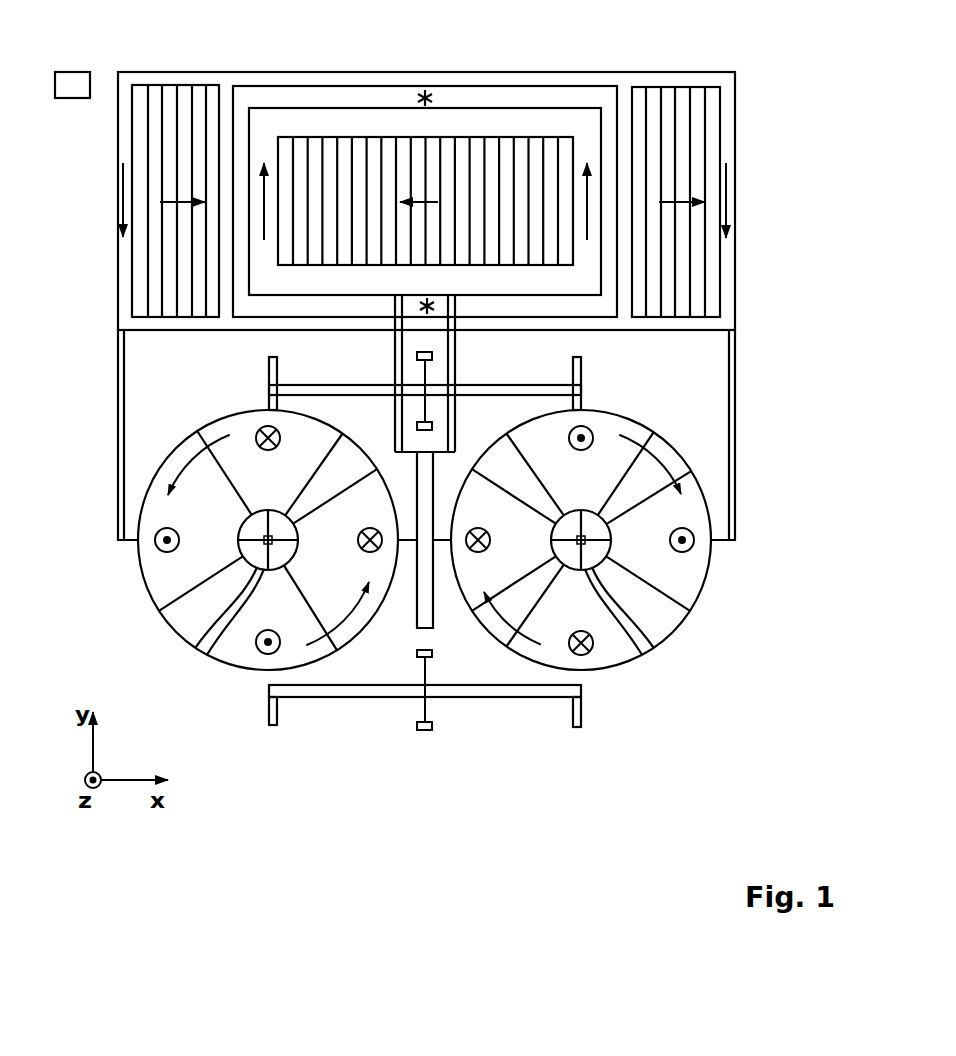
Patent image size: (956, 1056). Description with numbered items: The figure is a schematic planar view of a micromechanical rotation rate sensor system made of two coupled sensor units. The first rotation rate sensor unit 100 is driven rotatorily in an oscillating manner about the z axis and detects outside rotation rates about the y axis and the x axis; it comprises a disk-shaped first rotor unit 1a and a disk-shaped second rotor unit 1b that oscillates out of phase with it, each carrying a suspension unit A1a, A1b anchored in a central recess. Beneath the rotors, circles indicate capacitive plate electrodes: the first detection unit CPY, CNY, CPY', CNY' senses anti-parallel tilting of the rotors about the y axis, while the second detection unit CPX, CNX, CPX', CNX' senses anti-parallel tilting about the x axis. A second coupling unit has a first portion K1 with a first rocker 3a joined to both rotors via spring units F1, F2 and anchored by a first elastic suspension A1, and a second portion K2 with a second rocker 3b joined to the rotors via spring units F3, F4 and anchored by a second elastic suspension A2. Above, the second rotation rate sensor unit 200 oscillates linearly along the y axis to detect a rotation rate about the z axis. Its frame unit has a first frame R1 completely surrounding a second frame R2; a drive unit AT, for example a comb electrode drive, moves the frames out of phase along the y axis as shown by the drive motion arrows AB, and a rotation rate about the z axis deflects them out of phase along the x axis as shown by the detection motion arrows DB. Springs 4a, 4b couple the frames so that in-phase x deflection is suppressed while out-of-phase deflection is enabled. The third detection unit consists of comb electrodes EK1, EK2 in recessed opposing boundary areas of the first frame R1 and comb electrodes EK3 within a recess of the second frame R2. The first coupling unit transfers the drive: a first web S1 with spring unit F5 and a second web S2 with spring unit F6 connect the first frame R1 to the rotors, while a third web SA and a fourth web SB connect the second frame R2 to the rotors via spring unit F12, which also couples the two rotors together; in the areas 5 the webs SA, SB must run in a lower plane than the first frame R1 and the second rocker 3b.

The first rotation rate sensor unit 100 is at (758, 527).
The second rotation rate sensor unit 200 is at (760, 140).
The drive unit AT is at (72, 72).
The first multitude of capacitive comb electrodes EK1 is at (155, 112).
The second multitude of capacitive comb electrodes EK2 is at (682, 115).
The third multitude of capacitive comb electrodes EK3 is at (330, 153).
The drive motion arrows AB is at (263, 206).
The detection motion arrows DB is at (421, 200).
The first frame R1 is at (505, 80).
The second frame R2 is at (551, 123).
The spring 4a is at (431, 96).
The spring 4b is at (436, 307).
The lower-plane areas 5 is at (395, 378).
The second elastic suspension A2 is at (425, 372).
The first elastic suspension A1 is at (420, 708).
The first web S1 is at (118, 398).
The second web S2 is at (735, 398).
The first portion of second coupling unit K1 is at (494, 750).
The second portion of second coupling unit K2 is at (600, 391).
The first rocker 3a is at (453, 698).
The second rocker 3b is at (520, 385).
The spring unit F1 is at (273, 726).
The spring unit F2 is at (577, 728).
The spring unit F3 is at (269, 384).
The spring unit F4 is at (583, 364).
The further spring unit F5 is at (122, 543).
The third spring unit F6 is at (725, 545).
The spring unit F12 is at (434, 608).
The third web SA is at (395, 432).
The fourth web SB is at (455, 432).
The first rotor unit 1a is at (180, 640).
The second rotor unit 1b is at (668, 641).
The first suspension unit A1a is at (213, 656).
The second suspension unit A1b is at (640, 658).
The first detection unit electrode CNY is at (268, 452).
The second detection unit electrode CPX is at (190, 541).
The second detection unit electrode CNX is at (348, 541).
The first detection unit electrode CPY is at (269, 631).
The first detection unit electrode CPY' is at (580, 452).
The second detection unit electrode CNX' is at (504, 541).
The second detection unit electrode CPX' is at (658, 541).
The first detection unit electrode CNY' is at (580, 631).